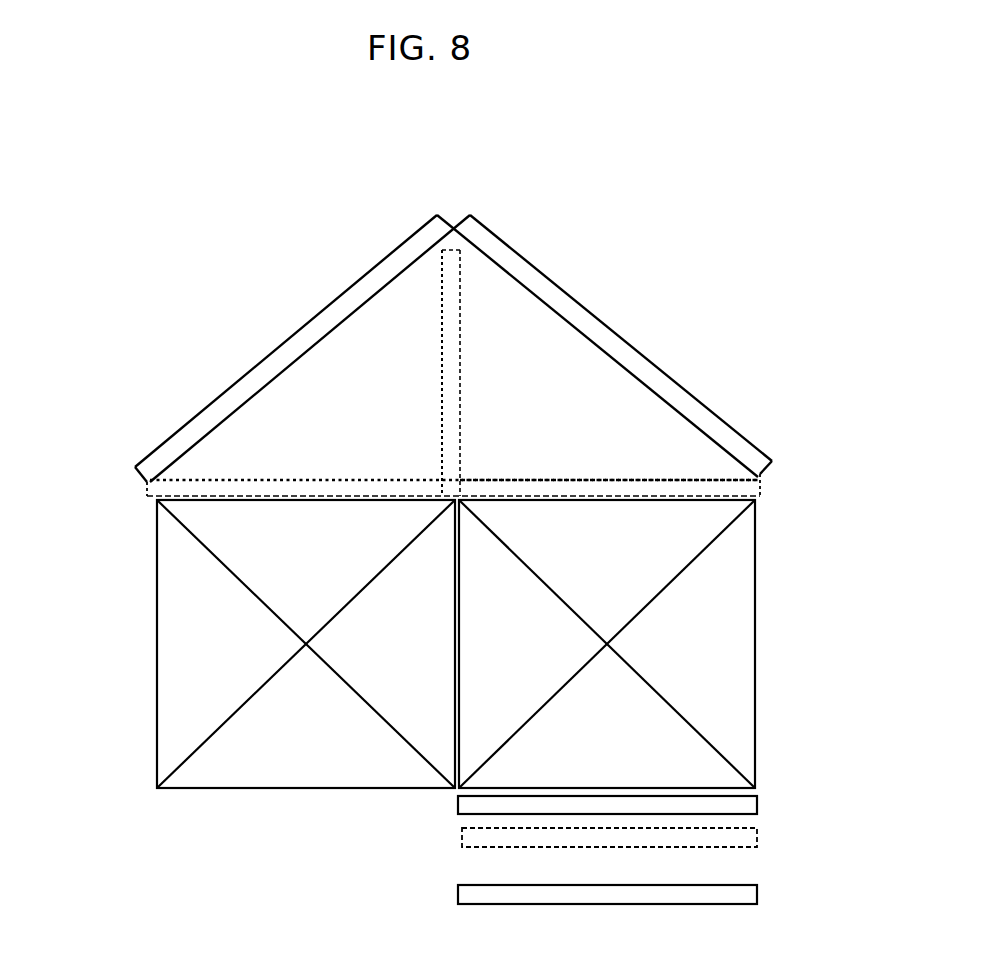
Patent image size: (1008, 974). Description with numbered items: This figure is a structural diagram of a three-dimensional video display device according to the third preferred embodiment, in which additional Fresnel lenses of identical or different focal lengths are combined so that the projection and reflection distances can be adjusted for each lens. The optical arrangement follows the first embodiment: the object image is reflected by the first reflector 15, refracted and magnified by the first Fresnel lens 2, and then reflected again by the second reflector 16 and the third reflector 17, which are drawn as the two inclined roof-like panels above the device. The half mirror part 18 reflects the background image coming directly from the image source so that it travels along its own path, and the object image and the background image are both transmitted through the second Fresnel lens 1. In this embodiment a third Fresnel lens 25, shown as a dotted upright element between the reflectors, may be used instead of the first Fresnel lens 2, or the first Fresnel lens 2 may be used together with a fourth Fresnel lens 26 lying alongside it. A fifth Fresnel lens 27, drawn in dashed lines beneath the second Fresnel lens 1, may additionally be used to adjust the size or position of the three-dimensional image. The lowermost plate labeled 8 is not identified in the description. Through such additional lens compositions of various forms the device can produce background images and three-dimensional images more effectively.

The second Fresnel lens 1 is at (662, 789).
The first Fresnel lens 2 is at (453, 459).
The bottom plate 8 is at (670, 898).
The first reflector 15 is at (245, 650).
The second reflector 16 is at (302, 348).
The third reflector 17 is at (604, 346).
The half mirror part 18 is at (644, 644).
The third Fresnel lens 25 is at (413, 373).
The fourth Fresnel lens 26 is at (609, 439).
The fifth Fresnel lens 27 is at (673, 833).